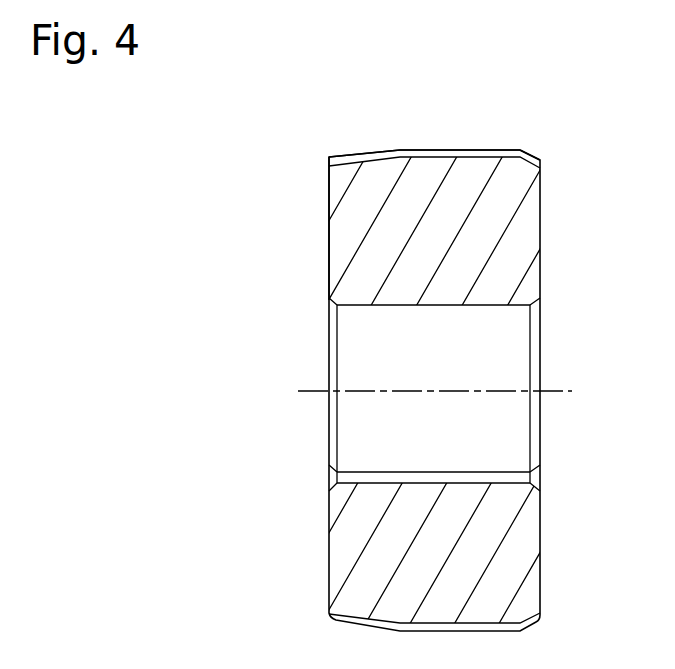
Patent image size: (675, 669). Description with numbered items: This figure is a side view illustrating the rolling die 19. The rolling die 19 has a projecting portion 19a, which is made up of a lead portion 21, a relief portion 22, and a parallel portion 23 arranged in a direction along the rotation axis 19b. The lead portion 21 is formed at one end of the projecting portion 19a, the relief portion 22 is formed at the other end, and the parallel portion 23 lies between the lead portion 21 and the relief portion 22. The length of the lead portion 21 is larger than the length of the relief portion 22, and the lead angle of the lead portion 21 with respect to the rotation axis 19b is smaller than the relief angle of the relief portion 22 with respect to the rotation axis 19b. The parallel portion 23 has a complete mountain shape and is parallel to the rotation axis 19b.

The rolling die 19 is at (537, 150).
The projecting portion 19a is at (348, 151).
The rotation axis 19b is at (563, 390).
The lead portion 21 is at (377, 153).
The relief portion 22 is at (534, 152).
The parallel portion 23 is at (441, 150).